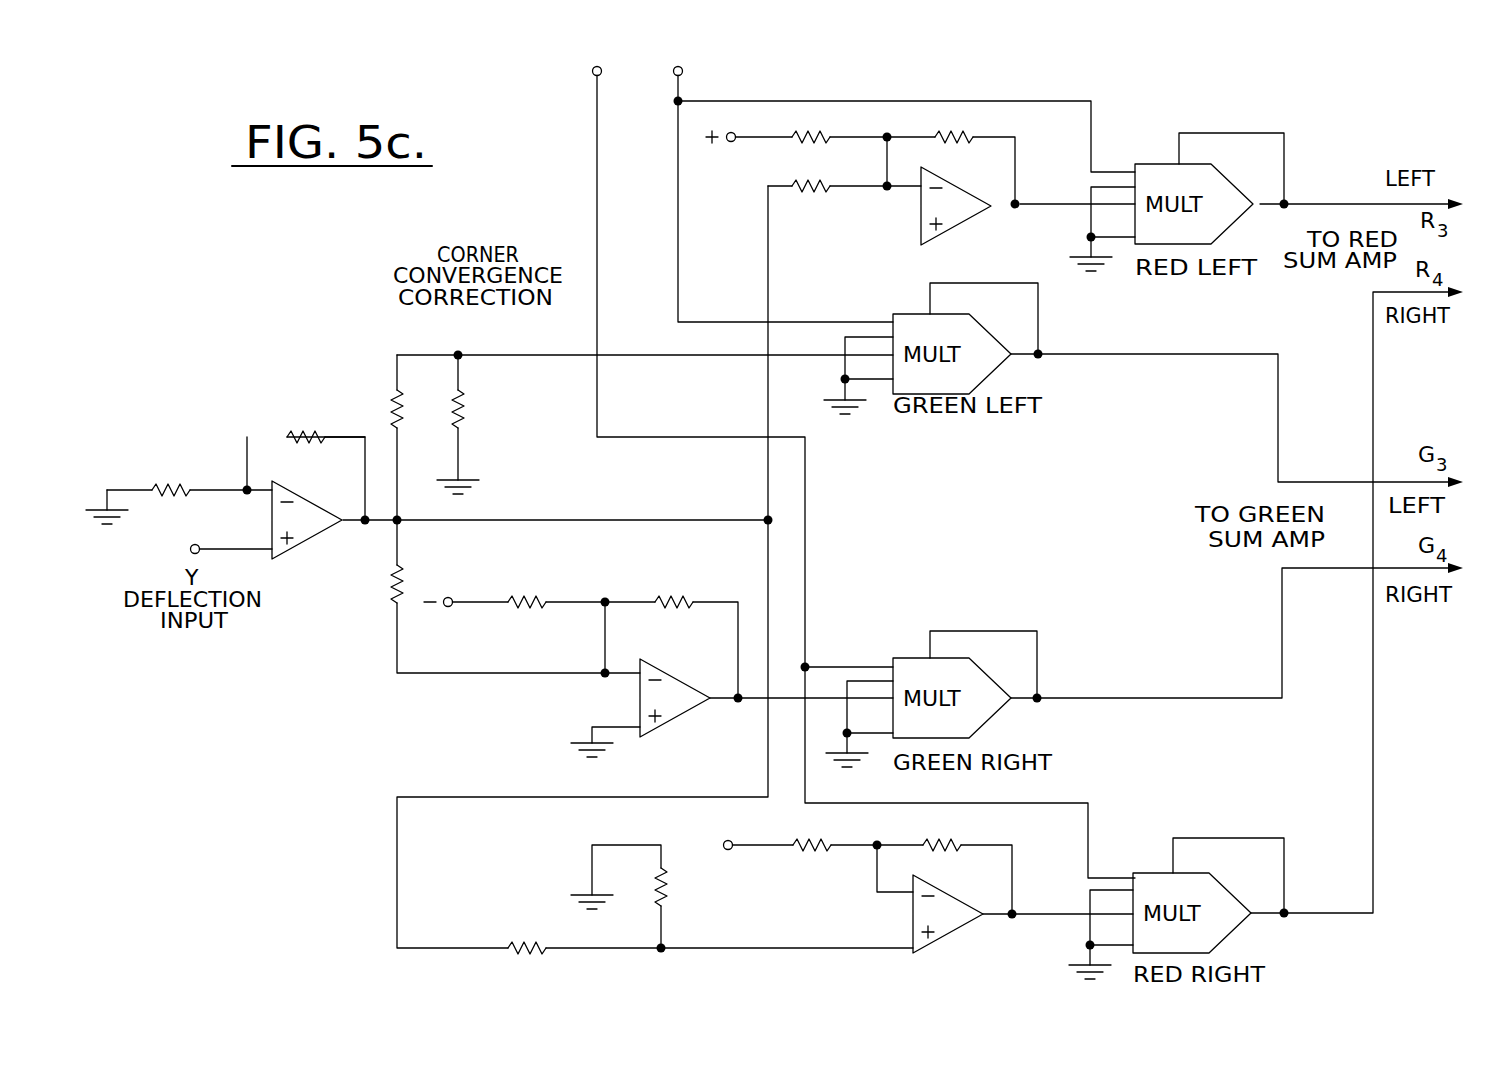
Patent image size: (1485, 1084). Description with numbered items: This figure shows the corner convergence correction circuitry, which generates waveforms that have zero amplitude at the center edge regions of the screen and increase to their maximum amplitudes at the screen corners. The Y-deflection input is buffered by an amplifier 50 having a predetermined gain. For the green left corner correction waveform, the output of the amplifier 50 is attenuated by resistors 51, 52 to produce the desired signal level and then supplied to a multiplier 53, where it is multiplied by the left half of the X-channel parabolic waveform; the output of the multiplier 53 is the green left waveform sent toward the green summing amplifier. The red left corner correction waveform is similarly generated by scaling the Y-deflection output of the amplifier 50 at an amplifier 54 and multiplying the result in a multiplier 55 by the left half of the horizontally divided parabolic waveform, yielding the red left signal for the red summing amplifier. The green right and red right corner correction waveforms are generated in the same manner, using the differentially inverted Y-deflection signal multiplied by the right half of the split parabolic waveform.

The amplifier 50 is at (316, 536).
The resistor 51 is at (396, 395).
The resistor 52 is at (463, 398).
The multiplier 53 is at (911, 313).
The amplifier 54 is at (945, 181).
The multiplier 55 is at (1156, 164).